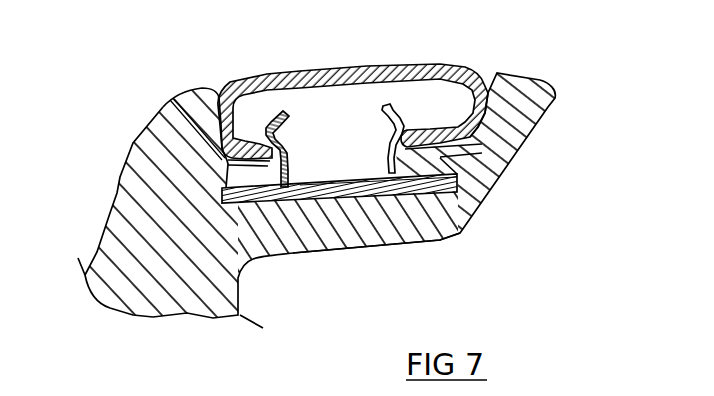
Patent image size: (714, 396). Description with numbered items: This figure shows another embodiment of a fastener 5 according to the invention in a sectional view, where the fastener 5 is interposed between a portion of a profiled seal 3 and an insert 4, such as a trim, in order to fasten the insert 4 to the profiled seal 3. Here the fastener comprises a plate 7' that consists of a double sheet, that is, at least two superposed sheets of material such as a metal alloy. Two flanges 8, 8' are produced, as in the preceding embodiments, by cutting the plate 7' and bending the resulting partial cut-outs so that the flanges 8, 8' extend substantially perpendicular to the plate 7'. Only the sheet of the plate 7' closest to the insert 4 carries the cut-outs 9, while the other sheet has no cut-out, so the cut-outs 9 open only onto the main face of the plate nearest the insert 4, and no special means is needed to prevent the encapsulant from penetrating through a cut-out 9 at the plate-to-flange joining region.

The profiled seal 3 is at (133, 191).
The insert 4 is at (355, 78).
The fastener 5 is at (323, 96).
The flange 8 is at (187, 137).
The flange 8' is at (476, 139).
The cut-out 9 is at (328, 188).
The plate 7' is at (416, 252).